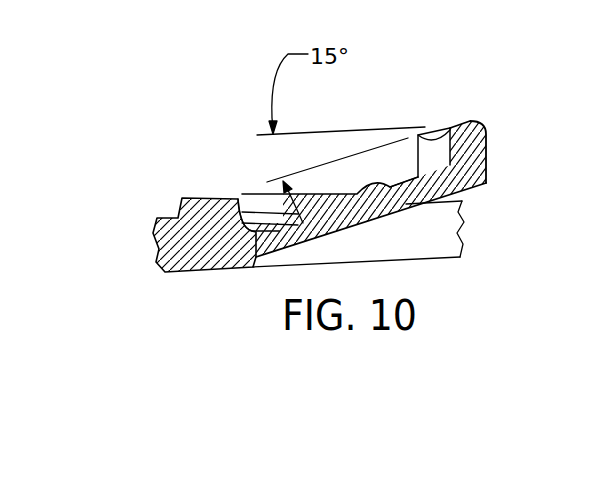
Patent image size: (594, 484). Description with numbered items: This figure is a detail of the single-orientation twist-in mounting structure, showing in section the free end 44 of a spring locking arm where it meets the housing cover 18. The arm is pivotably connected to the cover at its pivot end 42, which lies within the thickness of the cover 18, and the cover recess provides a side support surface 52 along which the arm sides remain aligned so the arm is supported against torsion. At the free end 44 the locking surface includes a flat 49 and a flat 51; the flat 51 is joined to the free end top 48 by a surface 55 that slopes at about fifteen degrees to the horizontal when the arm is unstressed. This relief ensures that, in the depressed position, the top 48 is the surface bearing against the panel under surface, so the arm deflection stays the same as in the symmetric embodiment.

The cover 18 is at (155, 260).
The pivot end 42 is at (246, 206).
The free end 44 is at (407, 156).
The top 48 is at (466, 121).
The locking surface flat 49 is at (420, 137).
The locking surface flat 51 is at (416, 168).
The side support surface 52 is at (442, 243).
The sloping surface 55 is at (429, 131).